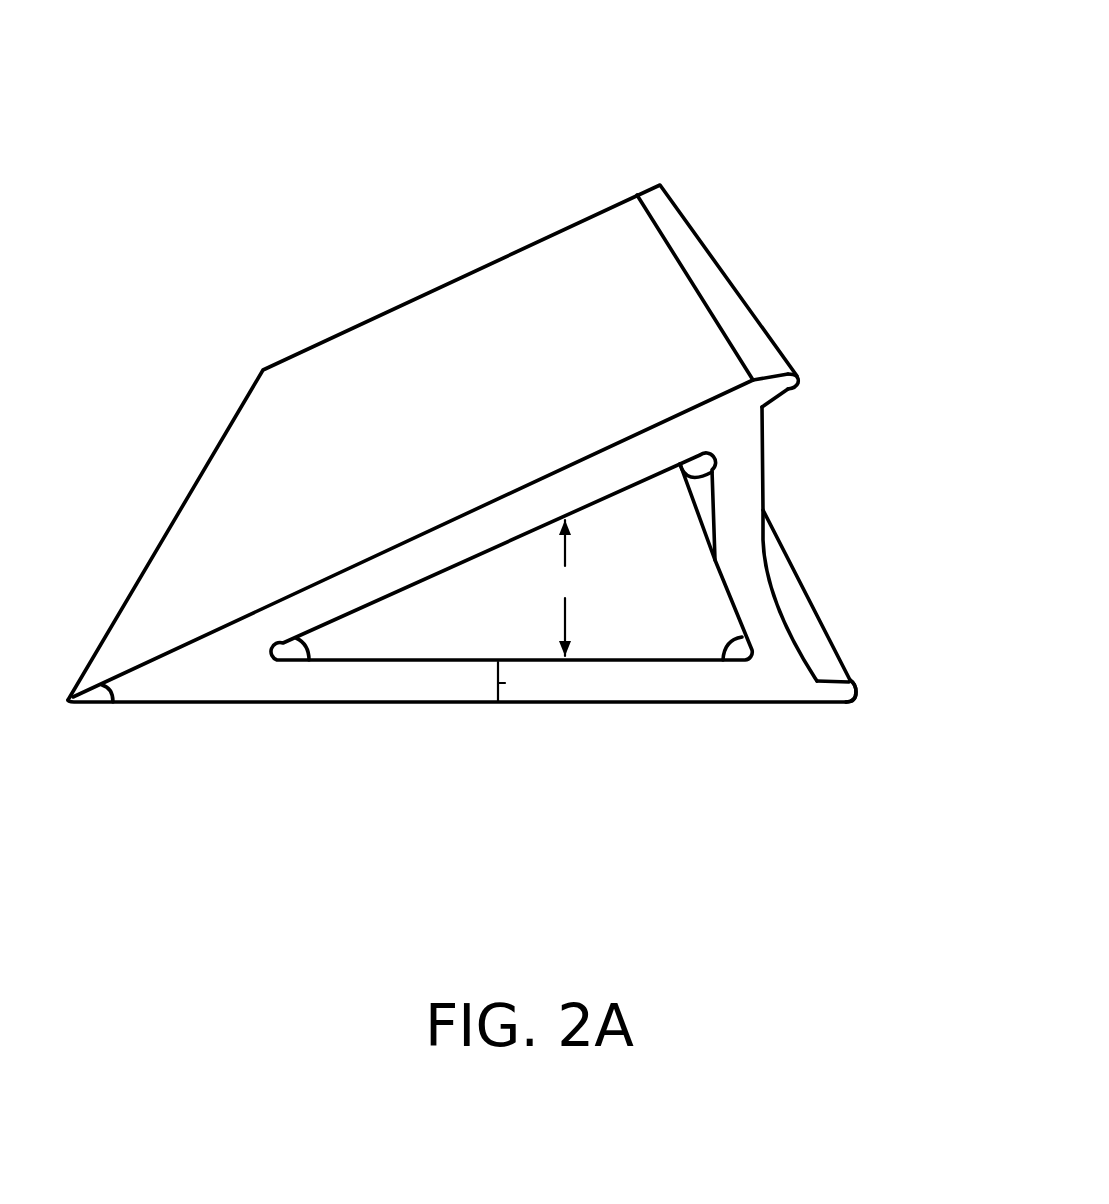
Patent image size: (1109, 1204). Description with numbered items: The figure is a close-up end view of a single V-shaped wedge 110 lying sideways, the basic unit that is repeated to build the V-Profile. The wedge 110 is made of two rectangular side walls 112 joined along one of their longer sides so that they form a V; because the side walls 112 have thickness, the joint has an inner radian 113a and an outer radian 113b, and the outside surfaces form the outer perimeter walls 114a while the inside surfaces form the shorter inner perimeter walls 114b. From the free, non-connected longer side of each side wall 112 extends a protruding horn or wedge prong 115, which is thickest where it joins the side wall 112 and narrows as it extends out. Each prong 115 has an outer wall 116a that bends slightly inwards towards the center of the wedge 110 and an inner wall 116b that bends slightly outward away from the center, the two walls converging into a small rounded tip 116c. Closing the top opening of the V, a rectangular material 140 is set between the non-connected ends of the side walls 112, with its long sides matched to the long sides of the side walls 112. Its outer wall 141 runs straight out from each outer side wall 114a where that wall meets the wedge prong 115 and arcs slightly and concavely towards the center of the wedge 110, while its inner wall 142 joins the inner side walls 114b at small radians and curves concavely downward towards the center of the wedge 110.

The V-shaped wedge 110 is at (536, 47).
The rectangular side wall 112 is at (494, 705).
The inner radian 113a is at (319, 653).
The outer radian 113b is at (123, 686).
The outer perimeter wall 114a is at (421, 532).
The inner perimeter wall 114b is at (562, 588).
The wedge prong 115 is at (831, 386).
The outer wall of wedge prong 116a is at (768, 377).
The inner wall of wedge prong 116b is at (789, 399).
The tip of wedge prong 116c is at (801, 376).
The rectangular material 140 is at (803, 422).
The outer wall of material 141 is at (779, 584).
The inner wall of material 142 is at (712, 561).